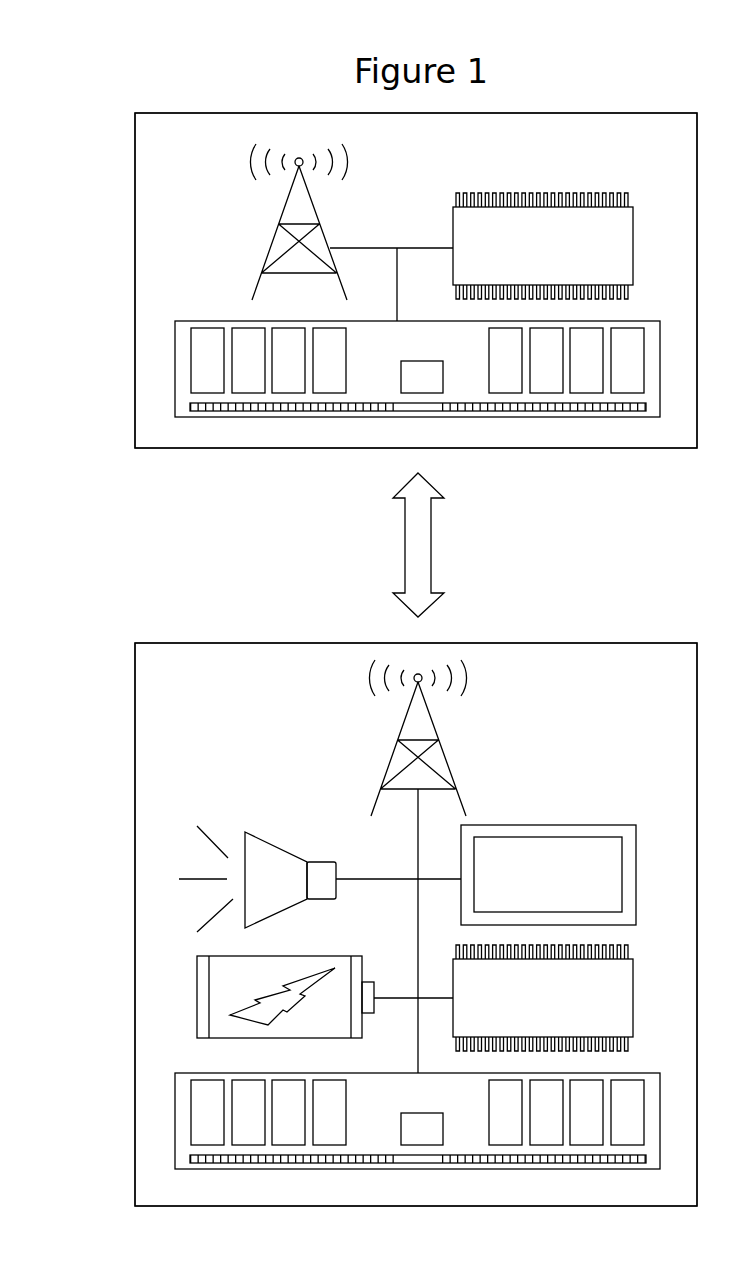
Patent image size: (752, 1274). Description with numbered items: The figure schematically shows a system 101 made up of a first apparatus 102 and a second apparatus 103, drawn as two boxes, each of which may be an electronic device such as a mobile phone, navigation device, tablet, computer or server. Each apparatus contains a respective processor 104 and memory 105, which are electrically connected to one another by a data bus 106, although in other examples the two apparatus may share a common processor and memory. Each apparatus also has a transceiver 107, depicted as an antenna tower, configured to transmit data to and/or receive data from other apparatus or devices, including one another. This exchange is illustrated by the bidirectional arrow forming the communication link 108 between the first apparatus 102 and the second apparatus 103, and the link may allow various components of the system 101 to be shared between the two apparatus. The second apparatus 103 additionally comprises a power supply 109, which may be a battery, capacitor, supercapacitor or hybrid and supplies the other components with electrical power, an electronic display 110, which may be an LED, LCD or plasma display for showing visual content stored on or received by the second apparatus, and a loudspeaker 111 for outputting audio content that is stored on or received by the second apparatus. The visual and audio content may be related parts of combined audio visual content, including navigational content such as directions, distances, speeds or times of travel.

The system 101 is at (116, 68).
The first apparatus 102 is at (416, 280).
The second apparatus 103 is at (416, 924).
The processor 104 is at (543, 622).
The memory 105 is at (421, 737).
The data bus 106 is at (375, 245).
The transceiver 107 is at (268, 248).
The communication link 108 is at (417, 535).
The power supply 109 is at (285, 997).
The electronic display 110 is at (548, 875).
The loudspeaker 111 is at (257, 879).